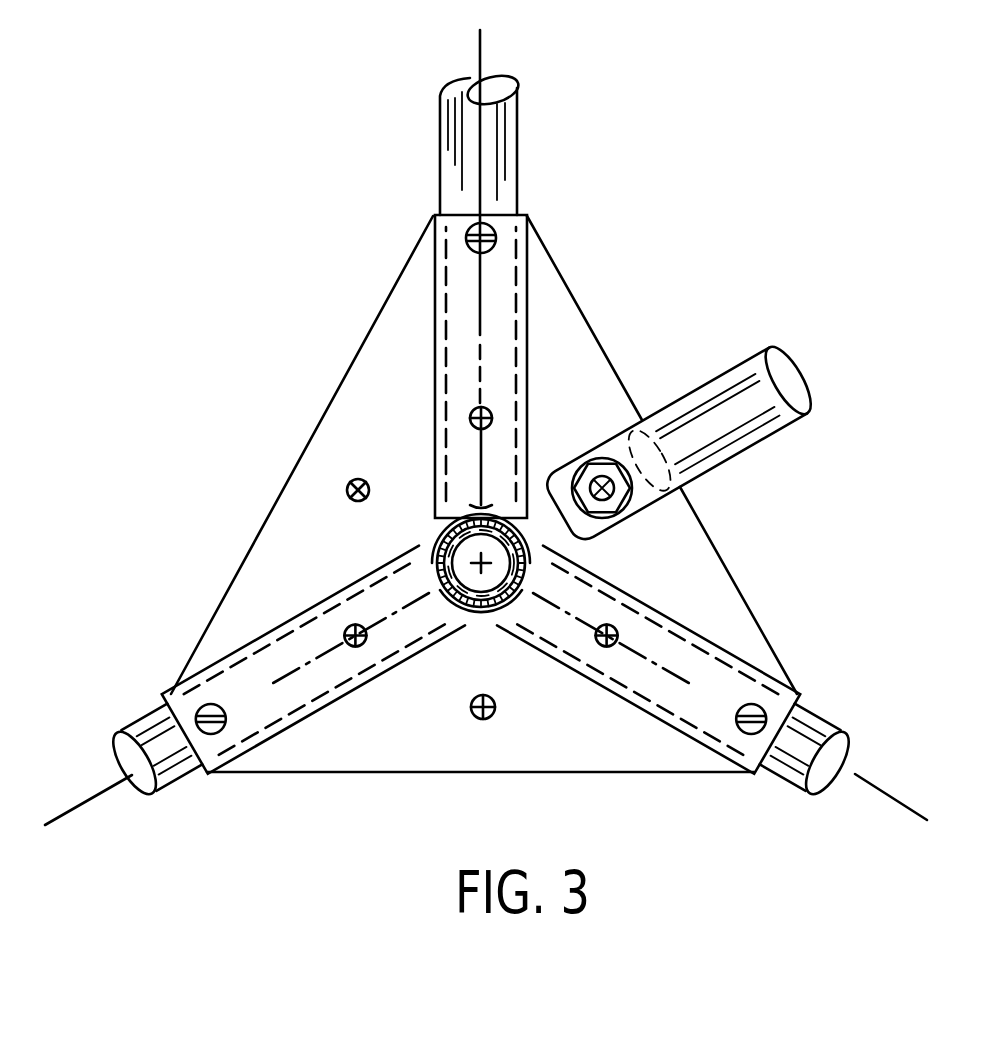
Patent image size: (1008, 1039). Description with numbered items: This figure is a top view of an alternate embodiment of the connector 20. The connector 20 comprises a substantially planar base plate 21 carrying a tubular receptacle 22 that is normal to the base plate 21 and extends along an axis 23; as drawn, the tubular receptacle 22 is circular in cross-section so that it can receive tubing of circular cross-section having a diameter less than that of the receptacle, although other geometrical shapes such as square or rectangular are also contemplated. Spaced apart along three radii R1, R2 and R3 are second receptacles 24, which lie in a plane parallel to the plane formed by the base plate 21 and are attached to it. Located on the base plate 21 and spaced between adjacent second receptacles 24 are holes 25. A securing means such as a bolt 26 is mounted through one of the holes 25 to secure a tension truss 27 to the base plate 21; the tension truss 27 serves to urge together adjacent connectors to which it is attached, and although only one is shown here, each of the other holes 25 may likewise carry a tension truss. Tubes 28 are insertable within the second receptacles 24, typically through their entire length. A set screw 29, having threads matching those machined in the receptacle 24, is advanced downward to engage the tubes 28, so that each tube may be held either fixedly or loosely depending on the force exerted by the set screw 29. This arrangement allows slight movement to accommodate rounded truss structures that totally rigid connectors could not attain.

The connector 20 is at (608, 346).
The base plate 21 is at (745, 588).
The tubular receptacle 22 is at (478, 622).
The axis 23 is at (490, 622).
The second receptacles 24 is at (524, 332).
The holes 25 is at (346, 493).
The bolt 26 is at (690, 490).
The tension truss 27 is at (660, 402).
The tubes 28 is at (518, 120).
The set screw 29 is at (522, 252).
The radius R1 is at (860, 778).
The radius R2 is at (484, 45).
The radius R3 is at (89, 801).